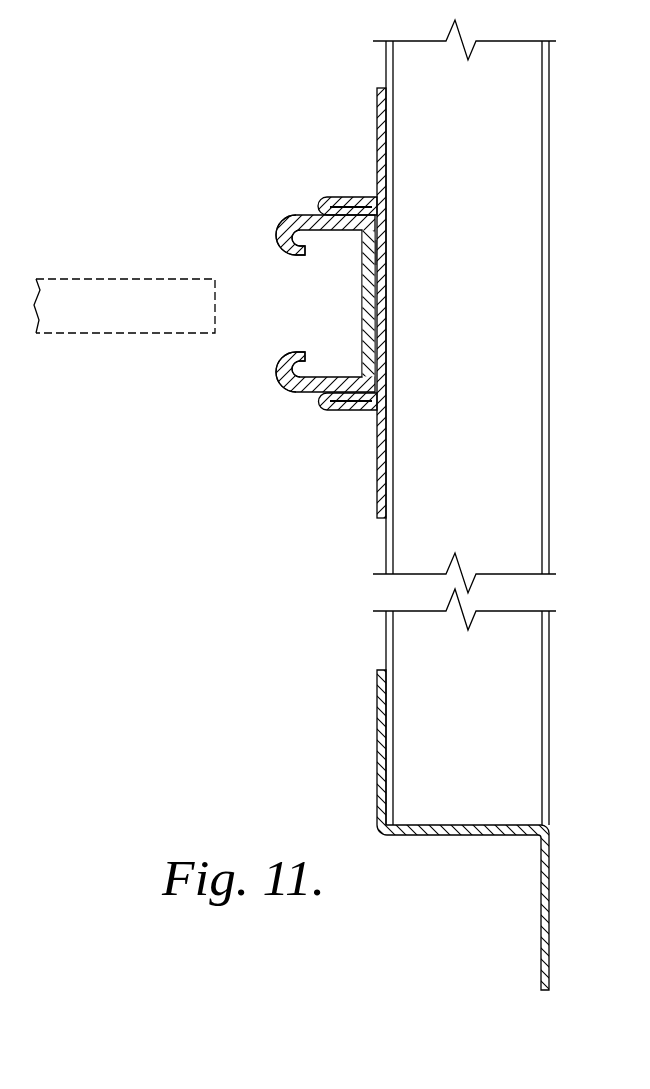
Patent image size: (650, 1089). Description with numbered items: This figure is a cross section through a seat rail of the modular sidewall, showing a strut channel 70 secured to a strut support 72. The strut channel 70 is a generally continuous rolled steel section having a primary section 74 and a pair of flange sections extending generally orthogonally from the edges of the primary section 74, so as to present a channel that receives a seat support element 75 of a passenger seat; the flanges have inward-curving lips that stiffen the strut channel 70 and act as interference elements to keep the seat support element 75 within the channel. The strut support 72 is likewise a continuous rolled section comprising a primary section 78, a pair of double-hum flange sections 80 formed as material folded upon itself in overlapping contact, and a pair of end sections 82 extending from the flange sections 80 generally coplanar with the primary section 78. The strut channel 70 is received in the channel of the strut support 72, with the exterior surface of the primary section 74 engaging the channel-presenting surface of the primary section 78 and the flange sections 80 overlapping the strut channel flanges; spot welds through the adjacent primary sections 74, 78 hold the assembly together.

The strut channel 70 is at (258, 284).
The strut support 72 is at (312, 100).
The primary section 74 is at (367, 292).
The seat support element 75 is at (107, 282).
The primary section 78 is at (381, 252).
The double-hum flange sections 80 is at (348, 202).
The end sections 82 is at (378, 112).